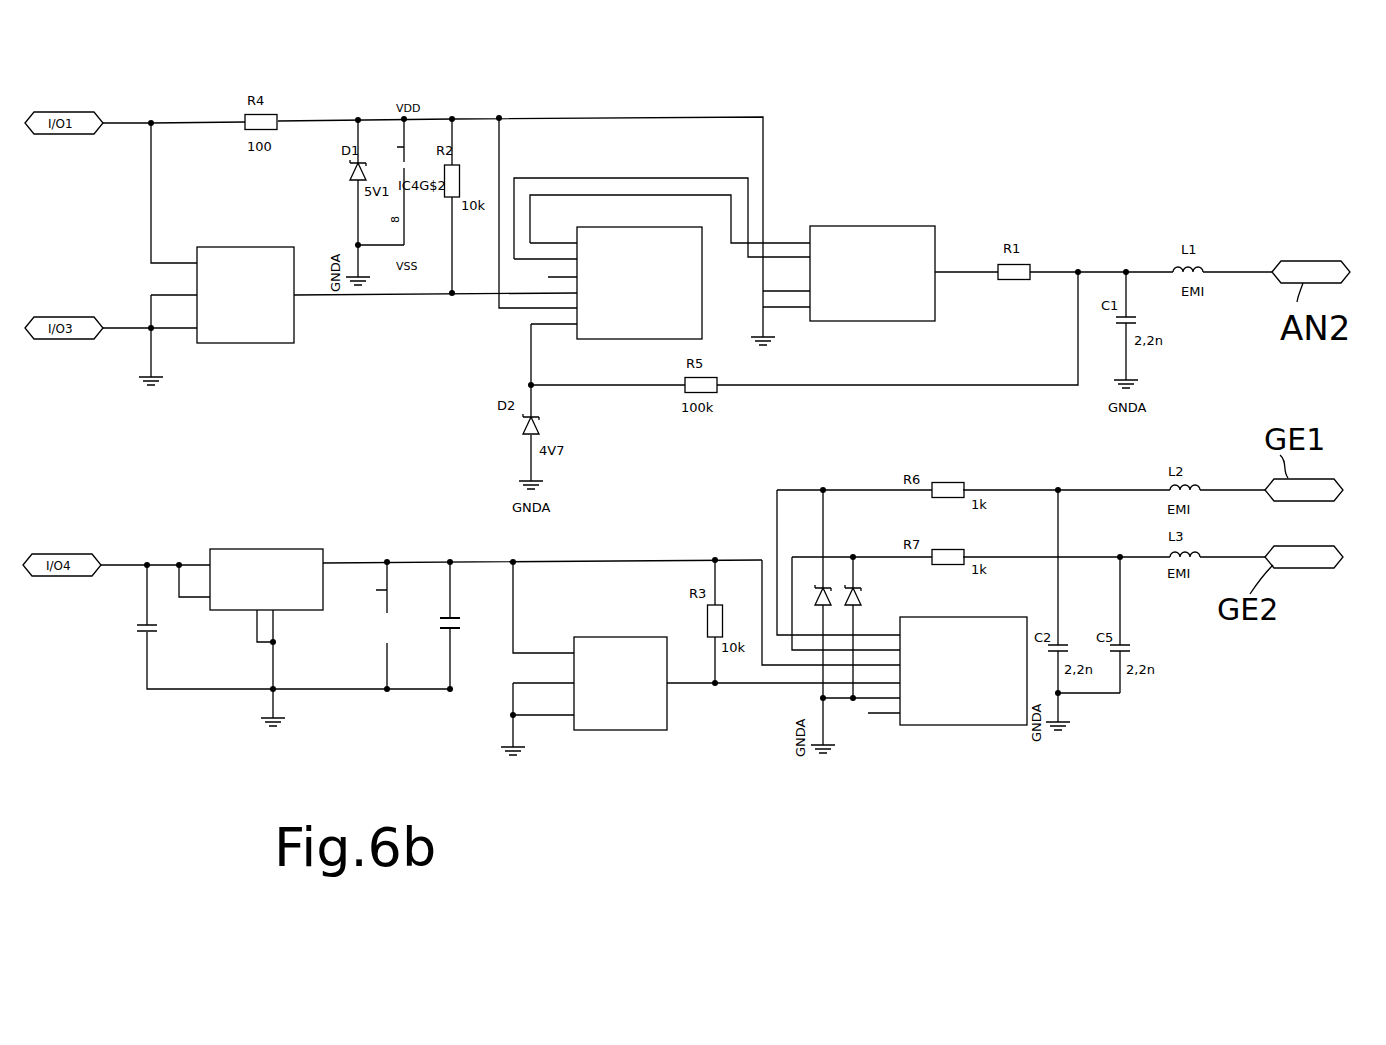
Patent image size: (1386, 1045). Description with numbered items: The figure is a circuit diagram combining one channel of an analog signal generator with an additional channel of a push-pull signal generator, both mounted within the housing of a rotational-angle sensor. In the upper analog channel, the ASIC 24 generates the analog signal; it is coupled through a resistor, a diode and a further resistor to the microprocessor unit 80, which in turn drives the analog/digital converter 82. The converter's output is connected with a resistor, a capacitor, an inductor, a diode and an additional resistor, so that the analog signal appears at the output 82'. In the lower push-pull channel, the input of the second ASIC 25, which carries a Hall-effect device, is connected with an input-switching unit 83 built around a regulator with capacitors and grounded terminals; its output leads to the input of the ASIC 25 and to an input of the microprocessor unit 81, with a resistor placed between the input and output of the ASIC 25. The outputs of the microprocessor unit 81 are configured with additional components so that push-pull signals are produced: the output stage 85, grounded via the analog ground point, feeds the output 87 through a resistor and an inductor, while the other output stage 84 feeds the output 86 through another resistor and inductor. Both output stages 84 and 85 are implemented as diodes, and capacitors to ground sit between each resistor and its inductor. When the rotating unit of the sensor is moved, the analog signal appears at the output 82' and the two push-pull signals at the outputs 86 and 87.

The ASIC 24 is at (278, 323).
The second ASIC 25 is at (633, 713).
The microprocessor unit 80 is at (702, 291).
The microprocessor unit 81 is at (1005, 710).
The analog/digital converter 82 is at (872, 269).
The output 82' is at (1311, 224).
The input-switching unit 83 is at (340, 689).
The output stage 84 is at (818, 598).
The output stage 85 is at (852, 590).
The output 86 is at (1273, 501).
The output 87 is at (1341, 512).